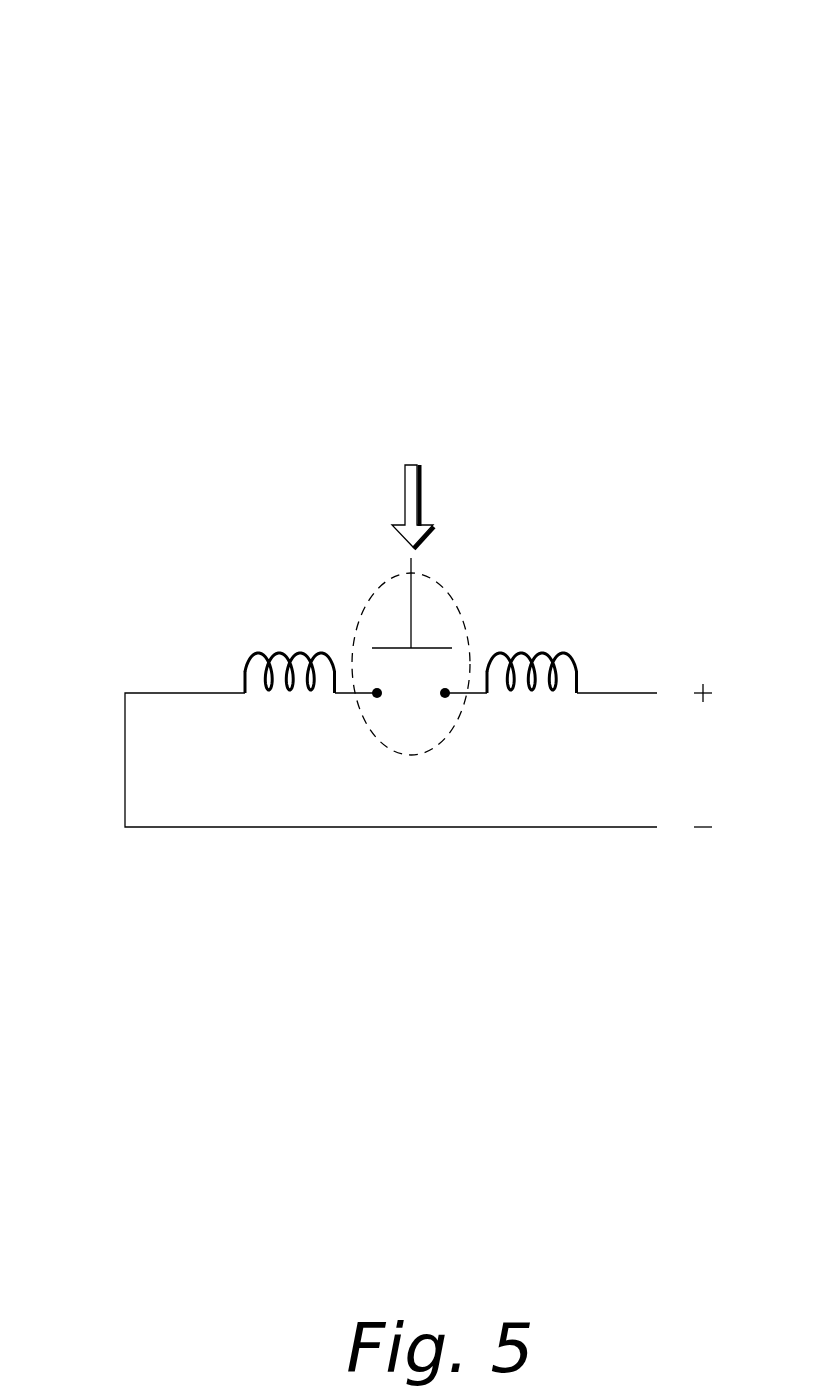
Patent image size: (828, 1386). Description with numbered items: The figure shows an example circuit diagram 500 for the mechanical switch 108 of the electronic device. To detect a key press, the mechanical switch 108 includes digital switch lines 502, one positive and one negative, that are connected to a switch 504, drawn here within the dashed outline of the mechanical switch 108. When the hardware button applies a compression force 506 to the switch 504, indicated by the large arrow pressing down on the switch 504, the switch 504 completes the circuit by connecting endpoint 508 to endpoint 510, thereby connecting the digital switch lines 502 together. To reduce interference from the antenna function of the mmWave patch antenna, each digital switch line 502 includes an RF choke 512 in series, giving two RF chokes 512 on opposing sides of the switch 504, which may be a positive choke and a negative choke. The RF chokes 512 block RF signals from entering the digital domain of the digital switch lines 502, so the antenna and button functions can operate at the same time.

The circuit diagram 500 is at (100, 44).
The digital switch lines 502 is at (148, 692).
The switch 504 is at (433, 647).
The compression force 506 is at (405, 500).
The endpoint 508 is at (377, 693).
The endpoint 510 is at (445, 693).
The RF choke 512 is at (245, 672).
The mechanical switch 108 is at (372, 598).